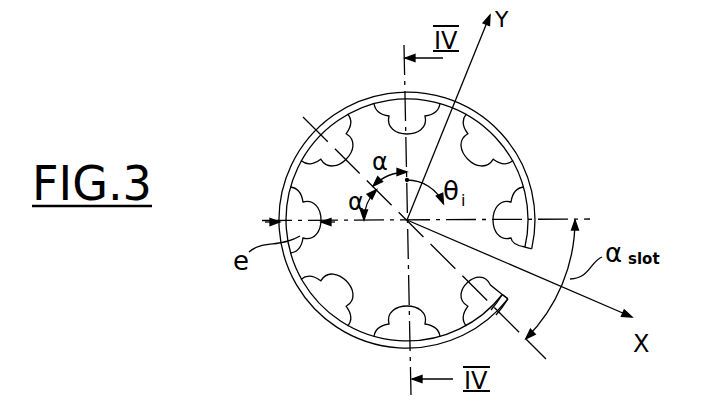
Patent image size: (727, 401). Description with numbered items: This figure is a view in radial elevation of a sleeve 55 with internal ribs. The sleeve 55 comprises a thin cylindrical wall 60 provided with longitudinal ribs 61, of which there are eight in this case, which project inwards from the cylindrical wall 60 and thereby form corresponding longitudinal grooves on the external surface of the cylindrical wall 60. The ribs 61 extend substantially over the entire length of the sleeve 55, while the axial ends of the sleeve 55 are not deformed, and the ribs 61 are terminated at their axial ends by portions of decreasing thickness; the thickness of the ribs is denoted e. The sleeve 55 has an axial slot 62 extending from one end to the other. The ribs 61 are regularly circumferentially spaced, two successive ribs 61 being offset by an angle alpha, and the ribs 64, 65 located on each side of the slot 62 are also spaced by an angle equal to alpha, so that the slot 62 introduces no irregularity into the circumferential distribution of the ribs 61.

The sleeve 55 is at (292, 129).
The cylindrical wall 60 is at (289, 176).
The longitudinal ribs 61 is at (333, 298).
The axial slot 62 is at (520, 282).
The rib located on one side of the slot 64 is at (530, 204).
The rib located on the other side of the slot 65 is at (487, 306).